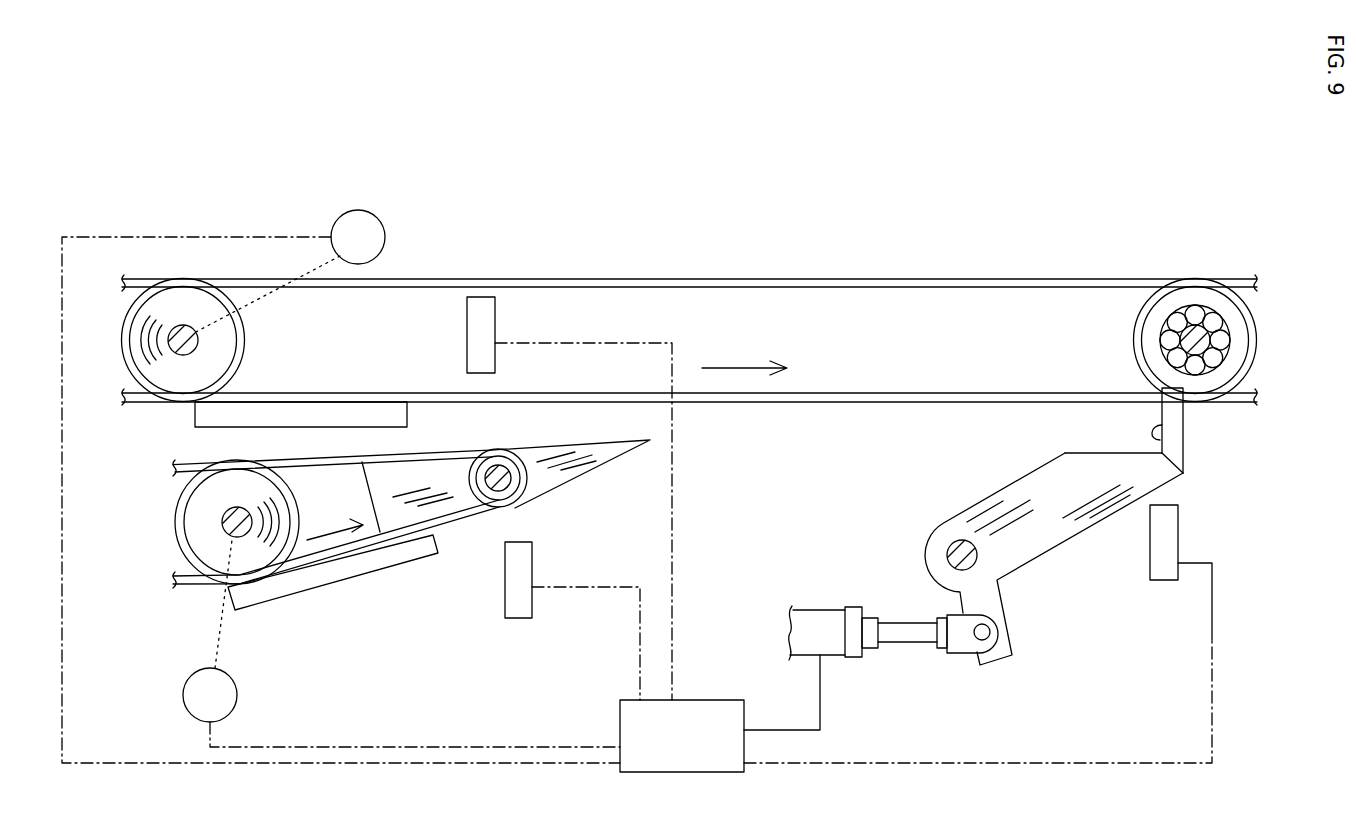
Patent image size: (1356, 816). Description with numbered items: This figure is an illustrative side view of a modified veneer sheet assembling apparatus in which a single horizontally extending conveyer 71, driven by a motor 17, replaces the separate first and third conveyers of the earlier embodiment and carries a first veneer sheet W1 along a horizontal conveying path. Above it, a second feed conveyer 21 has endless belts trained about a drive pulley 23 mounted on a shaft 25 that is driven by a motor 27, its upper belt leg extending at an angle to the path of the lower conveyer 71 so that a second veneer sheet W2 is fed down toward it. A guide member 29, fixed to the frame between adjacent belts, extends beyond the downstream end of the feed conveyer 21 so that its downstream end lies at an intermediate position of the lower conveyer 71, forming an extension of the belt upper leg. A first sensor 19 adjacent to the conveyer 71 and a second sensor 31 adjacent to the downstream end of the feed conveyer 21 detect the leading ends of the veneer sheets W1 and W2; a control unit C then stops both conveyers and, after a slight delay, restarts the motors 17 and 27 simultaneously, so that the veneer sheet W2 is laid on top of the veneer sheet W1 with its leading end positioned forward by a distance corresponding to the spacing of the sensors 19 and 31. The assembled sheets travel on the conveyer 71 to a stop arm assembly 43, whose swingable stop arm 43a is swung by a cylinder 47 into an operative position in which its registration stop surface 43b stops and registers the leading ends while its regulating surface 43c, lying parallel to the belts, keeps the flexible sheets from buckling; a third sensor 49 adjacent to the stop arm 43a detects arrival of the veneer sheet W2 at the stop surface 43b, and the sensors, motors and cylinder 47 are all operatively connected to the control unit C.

The motor 17 is at (385, 240).
The horizontally extending conveyer 71 is at (348, 392).
The first sensor 19 is at (480, 355).
The first veneer sheet W1 is at (232, 418).
The second feed conveyer 21 is at (463, 525).
The drive pulley 23 is at (203, 542).
The shaft 25 is at (222, 516).
The motor 27 is at (236, 712).
The guide member 29 is at (597, 465).
The second veneer sheet W2 is at (338, 580).
The second sensor 31 is at (522, 610).
The control unit C is at (700, 700).
The cylinder 47 is at (836, 618).
The stop arm assembly 43 is at (1057, 542).
The swingable stop arm 43a is at (942, 525).
The registration stop surface 43b is at (1193, 430).
The regulating surface 43c is at (1110, 453).
The third sensor 49 is at (1165, 562).